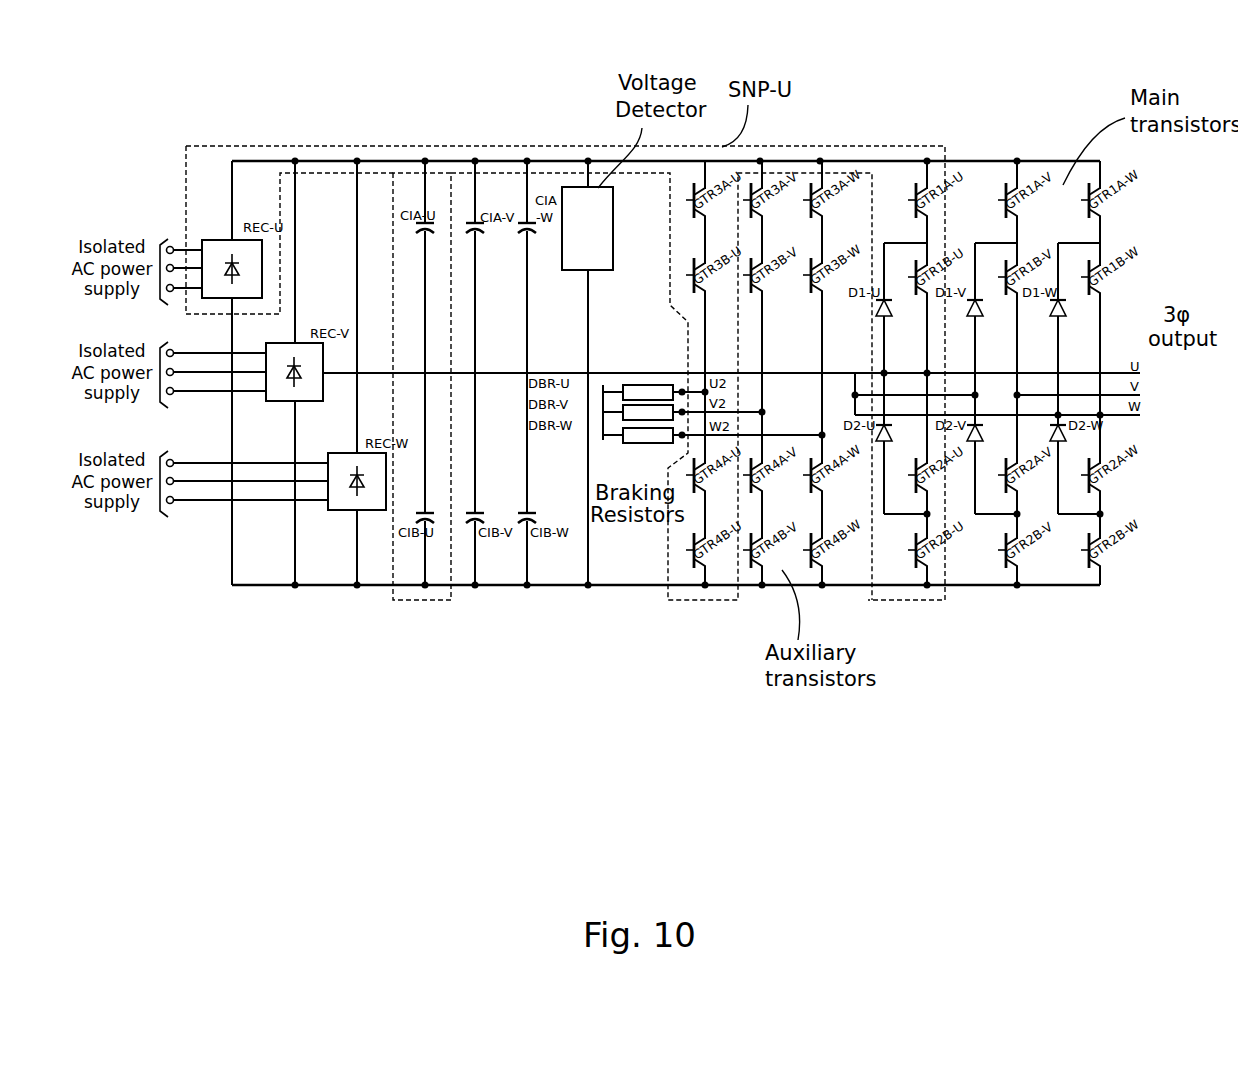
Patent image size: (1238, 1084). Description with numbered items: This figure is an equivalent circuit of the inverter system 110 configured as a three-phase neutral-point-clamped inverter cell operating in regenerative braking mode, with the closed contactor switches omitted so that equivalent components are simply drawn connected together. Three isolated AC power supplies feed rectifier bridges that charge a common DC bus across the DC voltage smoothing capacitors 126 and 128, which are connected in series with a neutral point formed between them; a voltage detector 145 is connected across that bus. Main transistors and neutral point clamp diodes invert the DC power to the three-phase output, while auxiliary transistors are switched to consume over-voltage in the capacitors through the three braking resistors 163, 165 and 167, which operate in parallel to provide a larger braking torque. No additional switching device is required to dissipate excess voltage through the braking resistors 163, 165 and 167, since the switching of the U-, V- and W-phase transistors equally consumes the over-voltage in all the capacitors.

The inverter system 110 is at (926, 108).
The DC voltage smoothing capacitor C1A 126 is at (468, 212).
The DC voltage smoothing capacitor C1B 128 is at (465, 543).
The voltage detector 145 is at (583, 203).
The braking resistor DBR-U 163 is at (638, 392).
The braking resistor DBR-V 165 is at (638, 413).
The braking resistor DBR-W 167 is at (638, 443).